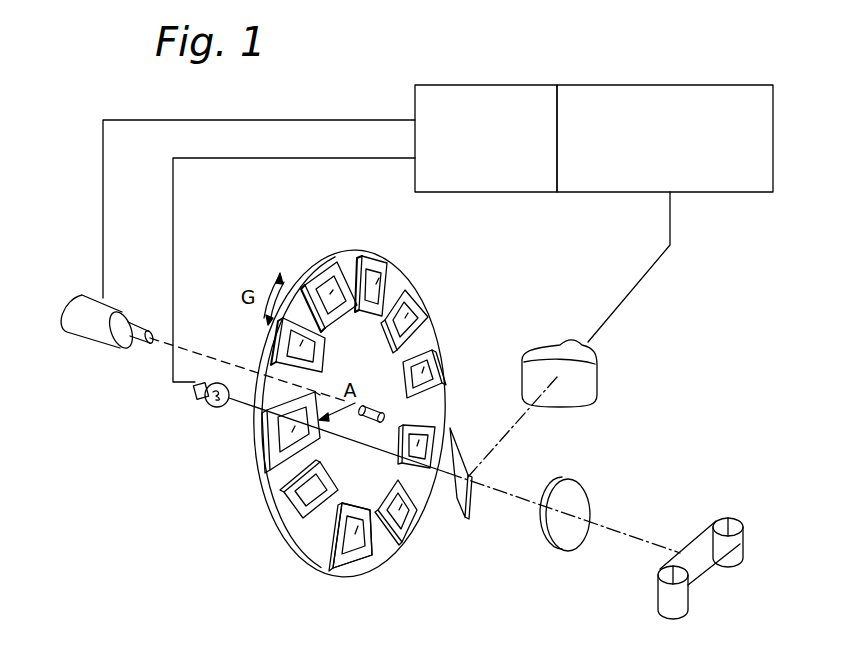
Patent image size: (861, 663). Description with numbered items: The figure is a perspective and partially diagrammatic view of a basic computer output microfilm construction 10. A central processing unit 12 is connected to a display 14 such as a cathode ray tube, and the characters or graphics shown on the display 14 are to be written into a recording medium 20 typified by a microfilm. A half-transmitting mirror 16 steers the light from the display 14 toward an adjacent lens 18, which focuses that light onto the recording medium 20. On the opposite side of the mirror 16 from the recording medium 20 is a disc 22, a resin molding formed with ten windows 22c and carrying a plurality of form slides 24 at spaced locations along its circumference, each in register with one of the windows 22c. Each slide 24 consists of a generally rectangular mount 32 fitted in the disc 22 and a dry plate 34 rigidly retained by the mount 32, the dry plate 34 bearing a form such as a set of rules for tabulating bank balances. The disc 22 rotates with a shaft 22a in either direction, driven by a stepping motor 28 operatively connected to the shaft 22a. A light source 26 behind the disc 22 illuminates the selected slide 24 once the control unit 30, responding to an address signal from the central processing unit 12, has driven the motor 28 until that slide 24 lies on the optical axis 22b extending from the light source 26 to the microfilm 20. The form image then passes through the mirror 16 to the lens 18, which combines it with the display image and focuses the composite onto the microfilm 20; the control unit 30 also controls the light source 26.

The COM construction 10 is at (794, 256).
The central processing unit 12 is at (707, 86).
The display 14 is at (597, 380).
The half-transmitting mirror 16 is at (455, 500).
The lens 18 is at (590, 500).
The recording medium 20 is at (700, 530).
The disc 22 is at (346, 262).
The shaft 22a is at (386, 408).
The optical axis 22b is at (430, 515).
The windows 22c is at (305, 510).
The form slides 24 is at (380, 540).
The light source 26 is at (195, 398).
The stepping motor 28 is at (83, 338).
The control unit 30 is at (517, 86).
The mount 32 is at (372, 262).
The dry plate 34 is at (377, 290).